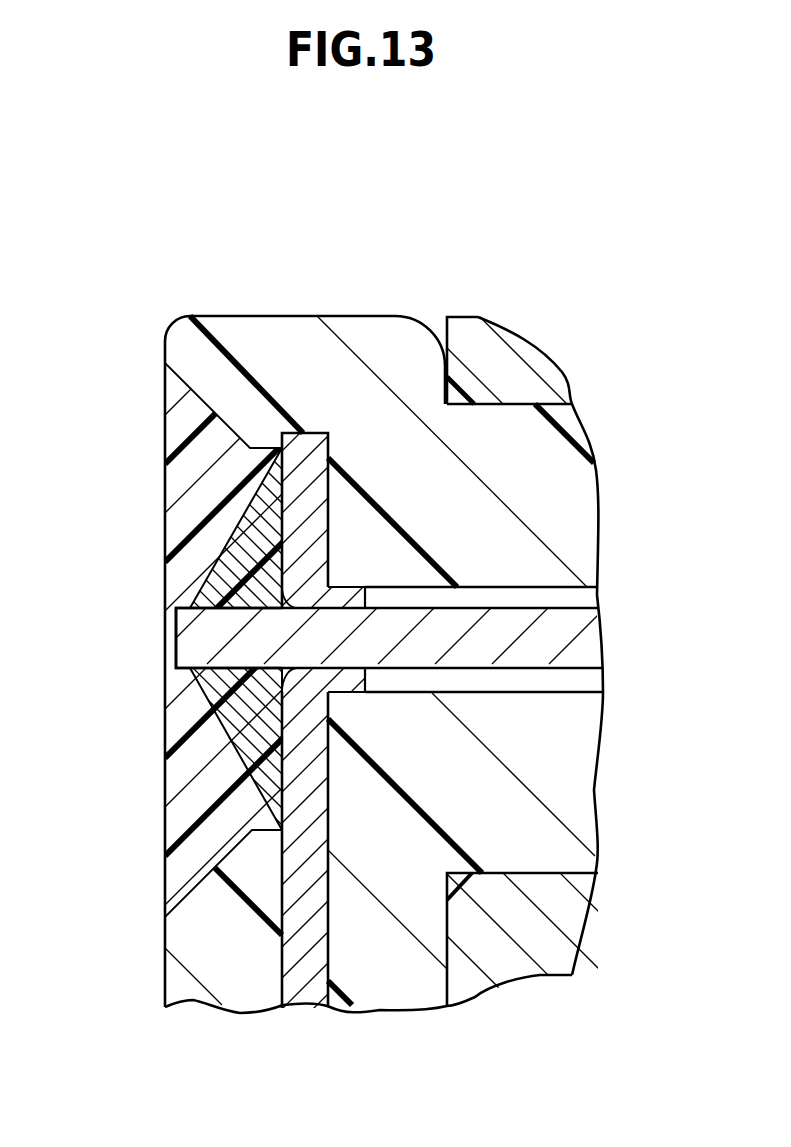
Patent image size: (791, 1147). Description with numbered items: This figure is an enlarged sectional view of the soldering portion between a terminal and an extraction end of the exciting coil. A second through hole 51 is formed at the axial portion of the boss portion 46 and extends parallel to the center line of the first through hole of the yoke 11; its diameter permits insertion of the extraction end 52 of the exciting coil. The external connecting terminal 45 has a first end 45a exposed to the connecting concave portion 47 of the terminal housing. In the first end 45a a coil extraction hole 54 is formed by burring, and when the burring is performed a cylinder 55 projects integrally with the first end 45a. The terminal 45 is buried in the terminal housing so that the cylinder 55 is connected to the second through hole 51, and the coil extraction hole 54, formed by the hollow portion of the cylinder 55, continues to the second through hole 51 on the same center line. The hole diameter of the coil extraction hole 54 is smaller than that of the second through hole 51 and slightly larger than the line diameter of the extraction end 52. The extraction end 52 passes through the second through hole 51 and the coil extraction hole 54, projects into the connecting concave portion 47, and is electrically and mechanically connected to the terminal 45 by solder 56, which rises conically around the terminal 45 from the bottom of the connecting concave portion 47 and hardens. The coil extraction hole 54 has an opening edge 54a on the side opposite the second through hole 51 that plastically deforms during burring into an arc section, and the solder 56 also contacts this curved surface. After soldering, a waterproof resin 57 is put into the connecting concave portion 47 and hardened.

The yoke 11 is at (540, 955).
The external connecting terminal 45 is at (293, 955).
The first end 45a is at (300, 486).
The boss portion 46 is at (552, 777).
The connecting concave portion 47 is at (205, 400).
The second through hole 51 is at (533, 587).
The extraction end 52 is at (580, 648).
The coil extraction hole 54 is at (340, 613).
The opening edge 54a is at (284, 670).
The cylinder 55 is at (352, 600).
The solder 56 is at (220, 551).
The waterproof resin 57 is at (177, 785).